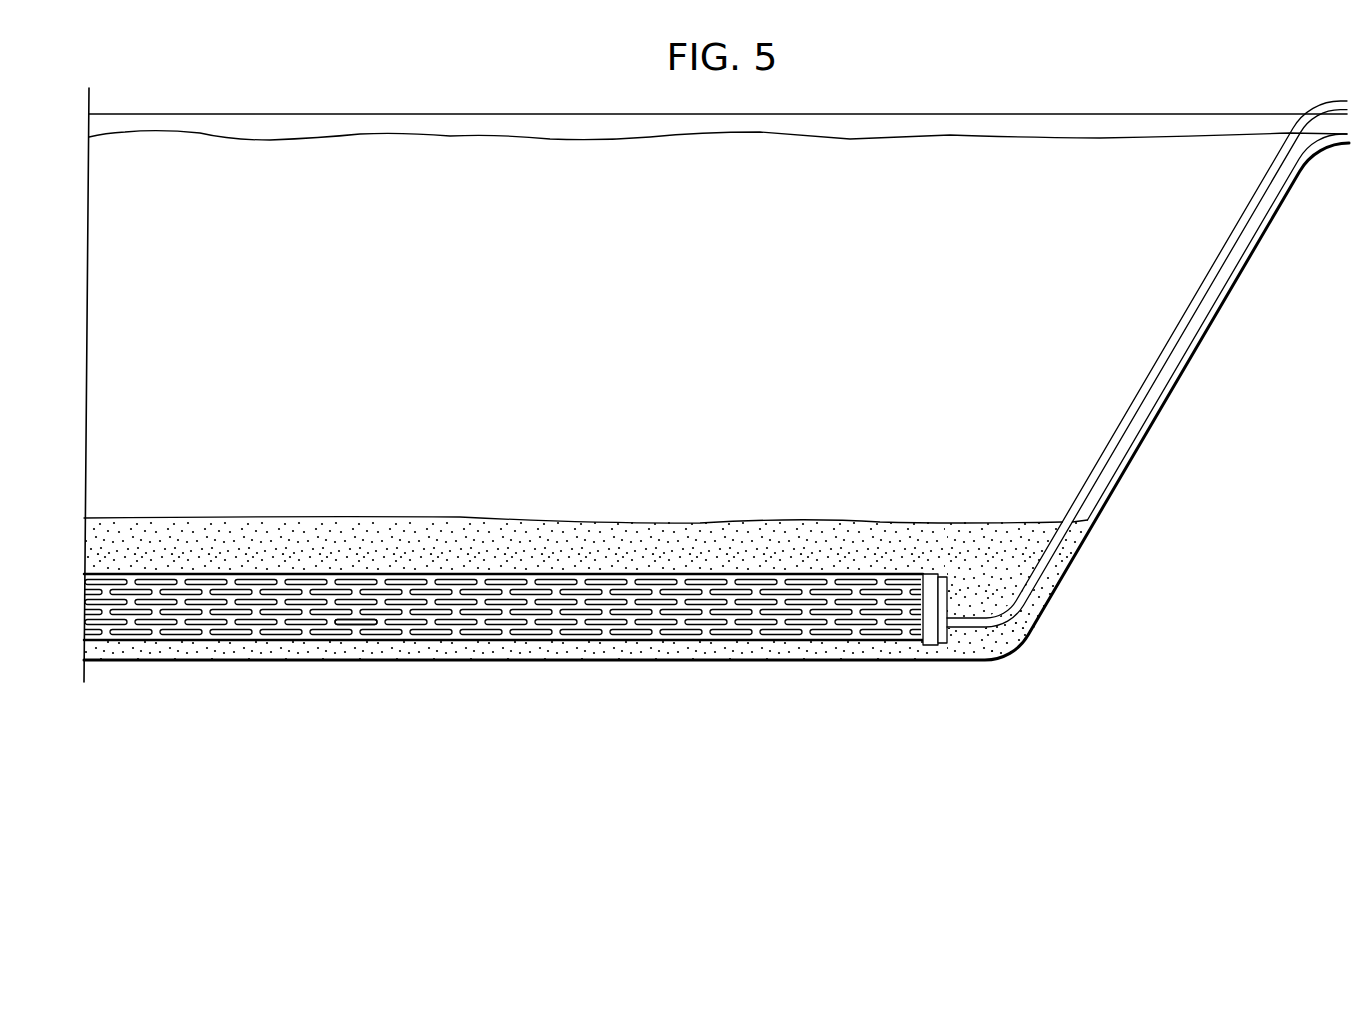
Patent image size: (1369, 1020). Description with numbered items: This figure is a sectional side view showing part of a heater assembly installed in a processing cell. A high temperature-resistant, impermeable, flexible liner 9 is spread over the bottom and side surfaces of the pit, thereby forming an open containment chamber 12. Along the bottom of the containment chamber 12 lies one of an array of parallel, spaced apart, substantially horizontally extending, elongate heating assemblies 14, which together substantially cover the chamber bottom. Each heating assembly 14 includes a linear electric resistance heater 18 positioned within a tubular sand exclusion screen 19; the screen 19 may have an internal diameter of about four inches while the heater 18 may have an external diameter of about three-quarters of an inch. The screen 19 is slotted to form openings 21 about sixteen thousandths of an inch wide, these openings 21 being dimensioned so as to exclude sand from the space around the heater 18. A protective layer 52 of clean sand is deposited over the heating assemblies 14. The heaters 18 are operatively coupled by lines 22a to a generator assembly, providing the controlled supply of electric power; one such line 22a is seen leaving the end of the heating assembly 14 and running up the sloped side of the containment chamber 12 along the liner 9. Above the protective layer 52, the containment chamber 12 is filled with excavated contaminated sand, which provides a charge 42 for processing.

The liner 9 is at (618, 650).
The containment chamber 12 is at (1166, 402).
The heating assembly 14 is at (506, 615).
The linear electric resistance heater 18 is at (792, 622).
The tubular sand exclusion screen 19 is at (813, 574).
The openings 21 is at (336, 622).
The lines 22a is at (1128, 418).
The charge 42 is at (621, 363).
The protective layer 52 is at (501, 558).